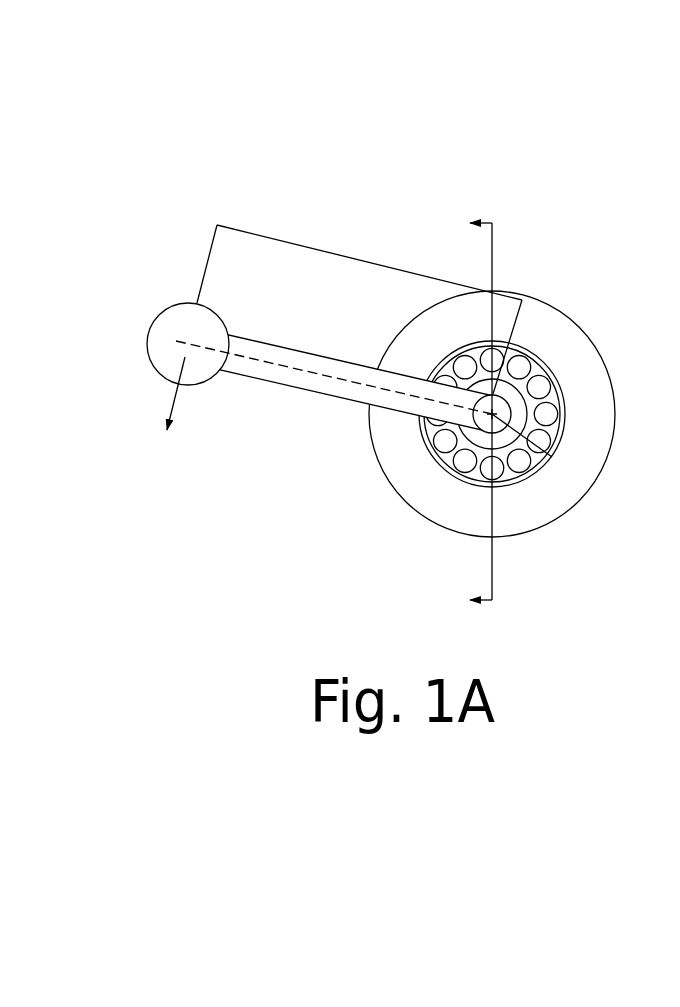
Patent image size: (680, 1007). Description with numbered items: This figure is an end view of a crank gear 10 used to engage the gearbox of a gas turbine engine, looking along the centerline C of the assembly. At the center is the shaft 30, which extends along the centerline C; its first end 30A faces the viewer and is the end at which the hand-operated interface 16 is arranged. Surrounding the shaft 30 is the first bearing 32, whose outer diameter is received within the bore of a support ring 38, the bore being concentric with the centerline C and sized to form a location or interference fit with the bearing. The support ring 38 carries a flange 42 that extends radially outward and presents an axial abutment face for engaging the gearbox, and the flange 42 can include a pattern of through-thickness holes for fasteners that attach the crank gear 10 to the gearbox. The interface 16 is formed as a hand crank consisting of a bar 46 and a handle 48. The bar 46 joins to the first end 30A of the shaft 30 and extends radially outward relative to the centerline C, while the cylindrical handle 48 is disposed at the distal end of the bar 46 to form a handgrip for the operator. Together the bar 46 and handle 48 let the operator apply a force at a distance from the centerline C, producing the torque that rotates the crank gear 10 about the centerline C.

The crank gear 10 is at (265, 167).
The interface 16 is at (221, 432).
The shaft 30 is at (538, 411).
The first end 30A is at (538, 411).
The first bearing 32 is at (537, 365).
The support ring 38 is at (543, 300).
The flange 42 is at (492, 374).
The bar 46 is at (292, 388).
The handle 48 is at (168, 305).
The centerline C is at (492, 414).